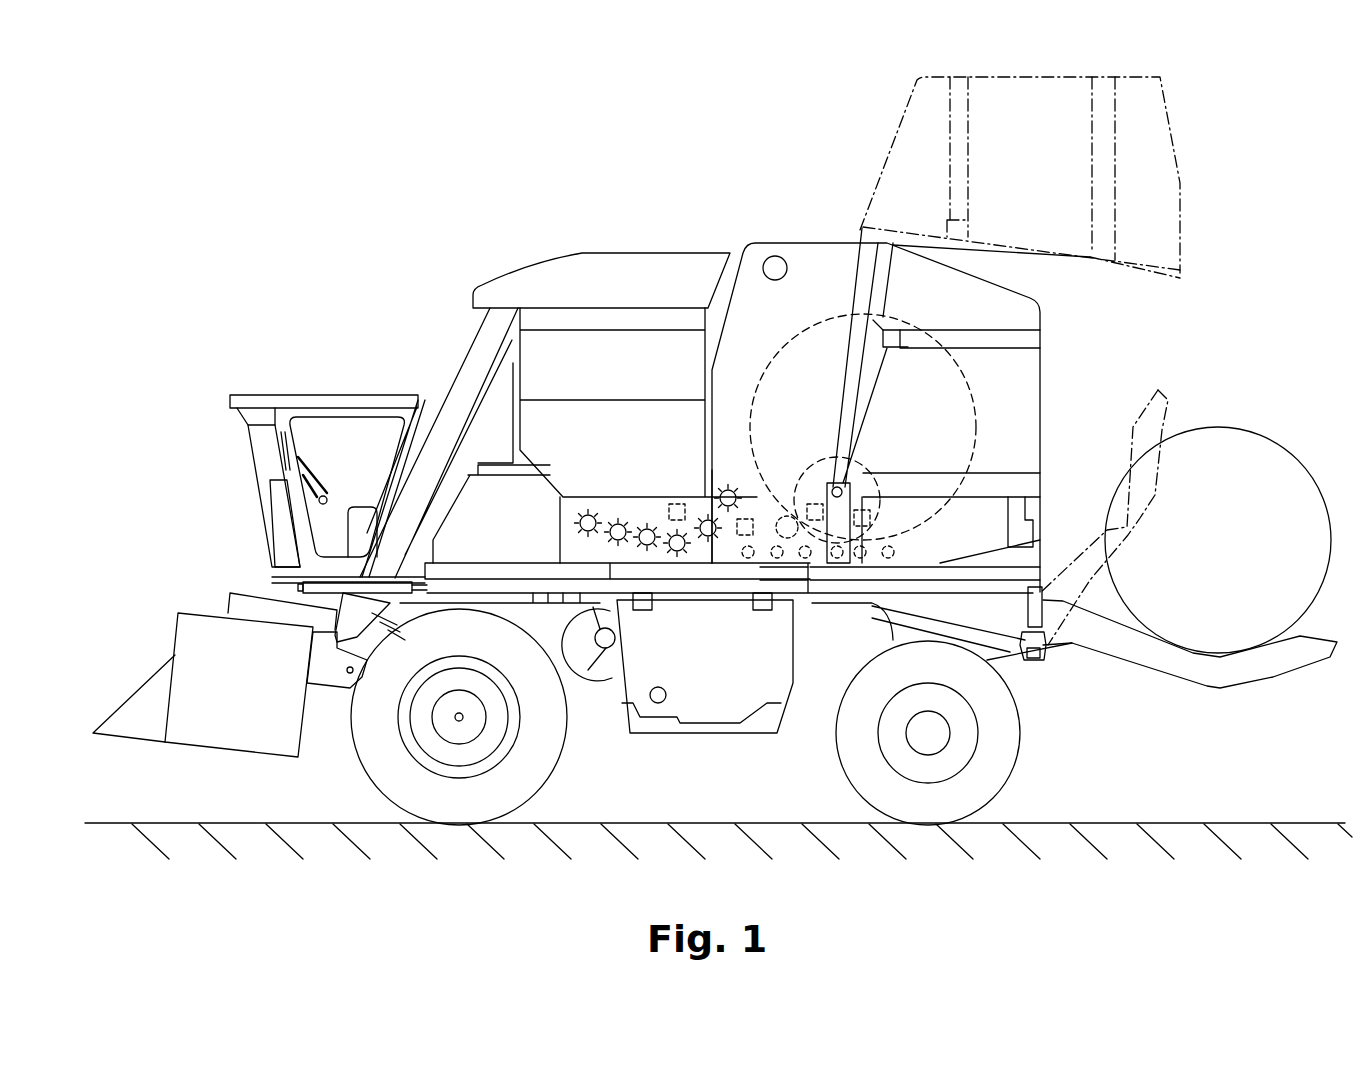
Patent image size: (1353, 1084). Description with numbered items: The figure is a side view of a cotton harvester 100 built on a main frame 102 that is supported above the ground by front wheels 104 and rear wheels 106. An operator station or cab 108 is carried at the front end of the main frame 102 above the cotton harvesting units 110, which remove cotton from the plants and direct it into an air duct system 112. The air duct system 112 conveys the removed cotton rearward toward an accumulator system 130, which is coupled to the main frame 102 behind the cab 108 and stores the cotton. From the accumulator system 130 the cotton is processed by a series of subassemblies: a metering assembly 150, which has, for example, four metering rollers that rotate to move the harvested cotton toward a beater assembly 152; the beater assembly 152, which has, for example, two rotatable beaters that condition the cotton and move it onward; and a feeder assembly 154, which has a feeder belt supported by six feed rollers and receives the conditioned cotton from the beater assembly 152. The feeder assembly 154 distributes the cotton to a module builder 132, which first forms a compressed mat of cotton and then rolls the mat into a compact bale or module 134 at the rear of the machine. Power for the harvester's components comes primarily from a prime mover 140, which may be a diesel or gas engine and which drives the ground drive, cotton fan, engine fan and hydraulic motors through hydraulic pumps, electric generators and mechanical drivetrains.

The cotton harvester 100 is at (326, 158).
The main frame 102 is at (302, 587).
The front wheels 104 is at (528, 757).
The rear wheels 106 is at (1000, 735).
The cab 108 is at (288, 415).
The cotton harvesting units 110 is at (132, 663).
The air duct system 112 is at (478, 363).
The accumulator system 130 is at (566, 232).
The module builder 132 is at (823, 222).
The module 134 is at (1230, 427).
The prime mover 140 is at (722, 698).
The metering assembly 150 is at (630, 510).
The beater assembly 152 is at (700, 503).
The feeder assembly 154 is at (794, 578).